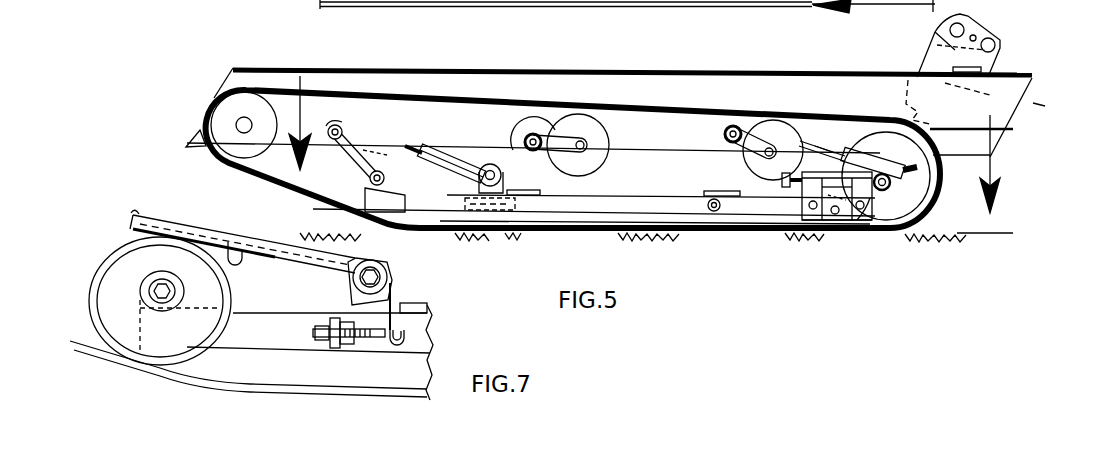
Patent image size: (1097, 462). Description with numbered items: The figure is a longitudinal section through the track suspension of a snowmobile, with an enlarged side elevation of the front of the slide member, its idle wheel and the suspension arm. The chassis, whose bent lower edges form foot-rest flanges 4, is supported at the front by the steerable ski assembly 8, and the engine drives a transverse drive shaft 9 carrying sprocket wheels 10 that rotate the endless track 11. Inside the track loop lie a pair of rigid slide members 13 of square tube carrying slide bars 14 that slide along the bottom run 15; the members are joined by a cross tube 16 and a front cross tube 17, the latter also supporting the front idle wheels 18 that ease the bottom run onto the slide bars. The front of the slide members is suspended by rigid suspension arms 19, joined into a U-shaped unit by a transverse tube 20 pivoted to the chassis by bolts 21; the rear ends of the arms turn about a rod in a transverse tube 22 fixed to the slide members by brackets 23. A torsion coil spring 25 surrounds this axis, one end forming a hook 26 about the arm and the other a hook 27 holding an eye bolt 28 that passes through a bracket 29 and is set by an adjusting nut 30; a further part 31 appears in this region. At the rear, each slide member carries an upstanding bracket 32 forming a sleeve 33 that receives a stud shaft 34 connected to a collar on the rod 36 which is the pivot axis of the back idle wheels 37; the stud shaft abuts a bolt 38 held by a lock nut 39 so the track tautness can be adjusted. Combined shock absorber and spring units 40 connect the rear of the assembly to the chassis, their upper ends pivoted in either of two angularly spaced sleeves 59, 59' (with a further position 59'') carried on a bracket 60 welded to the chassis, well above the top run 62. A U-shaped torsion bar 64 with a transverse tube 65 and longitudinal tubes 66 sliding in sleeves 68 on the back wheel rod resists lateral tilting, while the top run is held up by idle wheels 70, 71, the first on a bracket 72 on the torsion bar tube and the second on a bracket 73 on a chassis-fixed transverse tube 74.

In FIG. 5, the flanges 4 is at (644, 133).
In FIG. 5, the steerable ski assembly 8 is at (878, 10).
In FIG. 5, the drive shaft 9 is at (240, 120).
In FIG. 5, the sprocket wheels 10 is at (187, 140).
In FIG. 5, the endless track 11 is at (270, 192).
In FIG. 5, the rigid slide members 13 is at (577, 197).
In FIG. 7, the rigid slide members 13 is at (430, 307).
In FIG. 5, the slide bar 14 is at (545, 213).
In FIG. 7, the slide bar 14 is at (432, 352).
In FIG. 5, the bottom run 15 is at (700, 236).
In FIG. 7, the bottom run 15 is at (430, 386).
In FIG. 5, the cross tube 16 is at (706, 205).
In FIG. 5, the cross tube 17 is at (450, 212).
In FIG. 5, the front idle wheels 18 is at (345, 203).
In FIG. 7, the front idle wheels 18 is at (95, 303).
In FIG. 5, the suspension arms 19 is at (412, 152).
In FIG. 7, the suspension arms 19 is at (135, 218).
In FIG. 5, the transverse tube 20 is at (335, 126).
In FIG. 5, the bolts 21 is at (562, 9).
In FIG. 5, the transverse tube 22 is at (486, 172).
In FIG. 5, the brackets 23 is at (468, 205).
In FIG. 7, the brackets 23 is at (355, 303).
In FIG. 5, the torsion coil spring 25 is at (505, 174).
In FIG. 7, the torsion coil spring 25 is at (392, 280).
In FIG. 7, the hook 26 is at (237, 262).
In FIG. 7, the hook 27 is at (432, 328).
In FIG. 7, the eye bolt 28 is at (390, 345).
In FIG. 7, the bracket 29 is at (345, 348).
In FIG. 7, the adjusting nut 30 is at (320, 340).
In FIG. 5, the link bracket 31 is at (335, 150).
In FIG. 5, the bracket 32 is at (833, 212).
In FIG. 5, the sleeve 33 is at (810, 215).
In FIG. 5, the stud shaft 34 is at (870, 212).
In FIG. 5, the rod 36 is at (893, 232).
In FIG. 5, the back idle wheels 37 is at (920, 198).
In FIG. 5, the bolt 38 is at (797, 218).
In FIG. 5, the lock nut 39 is at (785, 190).
In FIG. 5, the combined shock absorber and compression coil spring units 40 is at (1054, 106).
In FIG. 5, the sleeve 59 is at (976, 68).
In FIG. 5, the sleeve 59' is at (1027, 41).
In FIG. 5, the bracket leg 59'' is at (917, 32).
In FIG. 5, the bracket 60 is at (985, 70).
In FIG. 5, the top run 62 is at (660, 110).
In FIG. 5, the torsion bar 64 is at (809, 128).
In FIG. 5, the transverse tube 65 is at (726, 136).
In FIG. 5, the longitudinal tubes 66 is at (850, 150).
In FIG. 5, the sleeves 68 is at (876, 176).
In FIG. 5, the idle wheel 70 is at (800, 140).
In FIG. 5, the idle wheel 71 is at (618, 110).
In FIG. 5, the bracket 72 is at (760, 122).
In FIG. 5, the bracket 73 is at (562, 118).
In FIG. 5, the transverse tube 74 is at (533, 133).